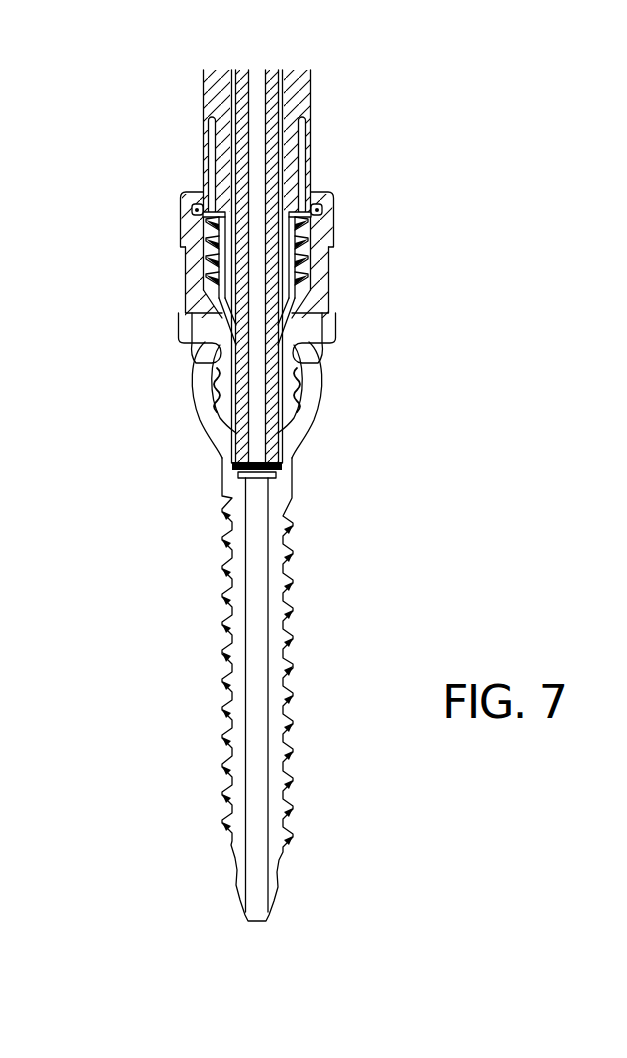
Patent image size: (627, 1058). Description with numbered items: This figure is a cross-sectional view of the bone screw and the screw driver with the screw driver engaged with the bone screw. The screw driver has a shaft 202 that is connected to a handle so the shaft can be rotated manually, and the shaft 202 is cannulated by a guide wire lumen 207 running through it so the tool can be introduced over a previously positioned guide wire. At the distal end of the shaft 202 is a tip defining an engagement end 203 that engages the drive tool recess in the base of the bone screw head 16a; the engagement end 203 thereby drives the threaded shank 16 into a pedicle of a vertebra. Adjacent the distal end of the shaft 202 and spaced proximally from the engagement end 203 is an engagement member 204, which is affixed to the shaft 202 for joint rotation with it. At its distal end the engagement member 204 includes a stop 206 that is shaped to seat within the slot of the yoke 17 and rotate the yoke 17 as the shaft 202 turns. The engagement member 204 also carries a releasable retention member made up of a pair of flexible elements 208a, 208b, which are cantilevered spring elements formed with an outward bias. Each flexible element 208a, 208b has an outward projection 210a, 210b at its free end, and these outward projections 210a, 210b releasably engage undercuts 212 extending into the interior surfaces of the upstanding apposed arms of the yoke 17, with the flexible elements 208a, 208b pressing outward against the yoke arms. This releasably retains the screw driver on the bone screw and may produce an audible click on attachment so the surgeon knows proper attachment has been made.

The threaded shank 16 is at (288, 530).
The bone screw head 16a is at (190, 403).
The yoke 17 is at (335, 282).
The shaft 202 is at (236, 140).
The engagement end 203 is at (218, 448).
The engagement member 204 is at (300, 92).
The stop 206 is at (325, 253).
The guide wire lumen 207 is at (257, 333).
The flexible element 208a is at (316, 168).
The flexible element 208b is at (201, 170).
The outward projection 210a is at (325, 207).
The outward projection 210b is at (193, 208).
The undercuts 212 is at (214, 213).